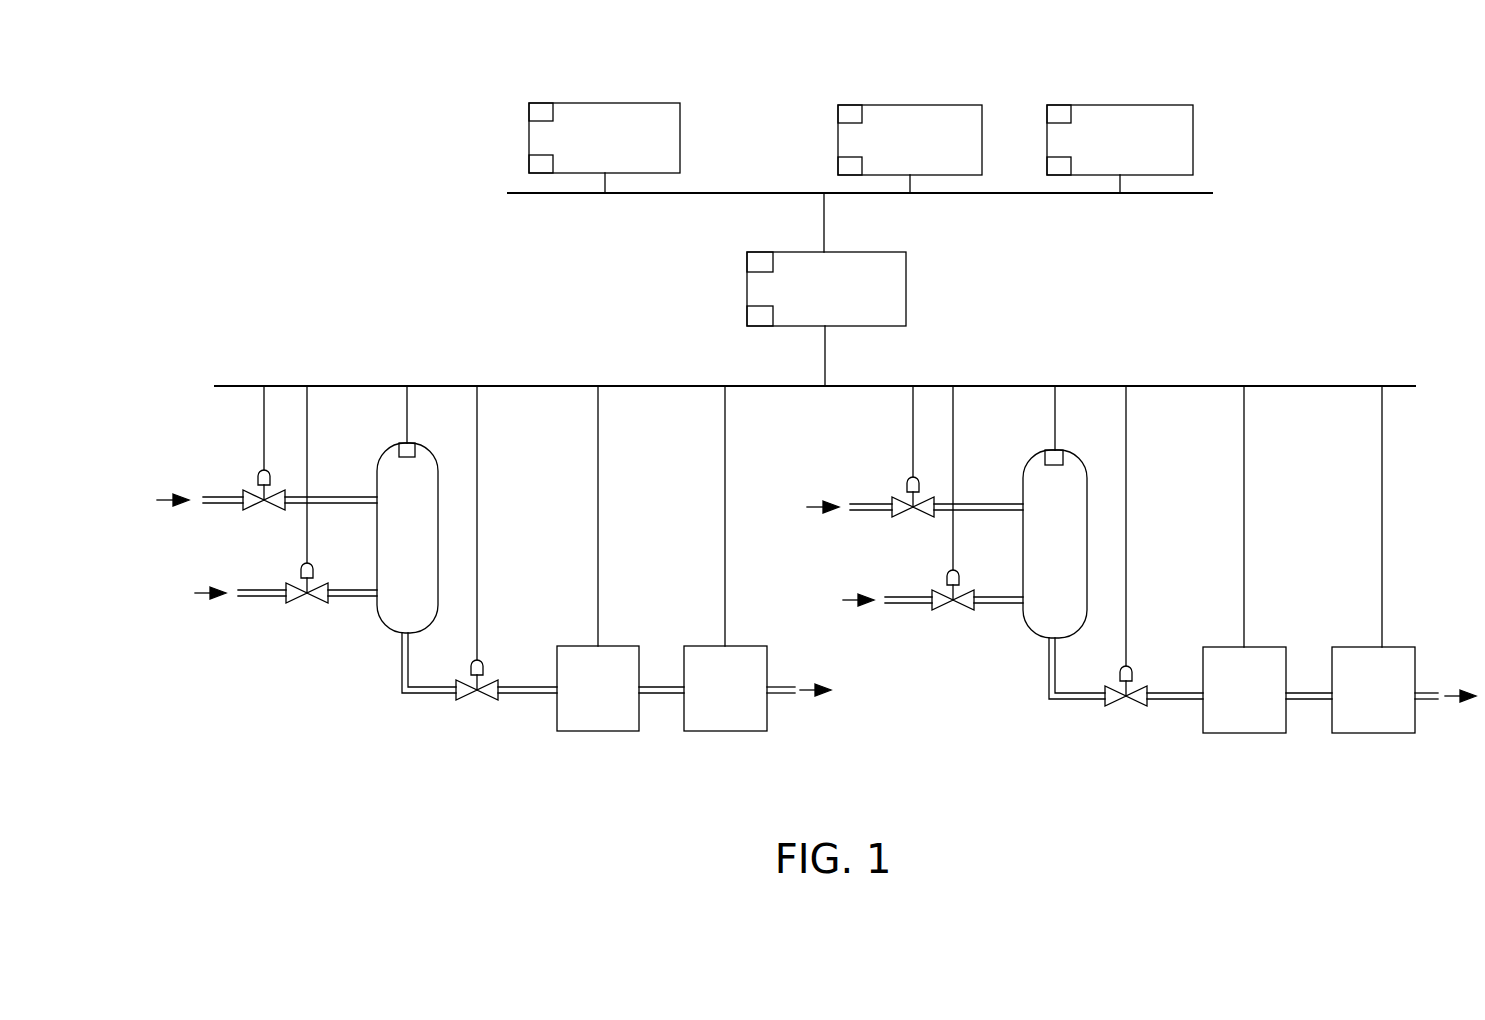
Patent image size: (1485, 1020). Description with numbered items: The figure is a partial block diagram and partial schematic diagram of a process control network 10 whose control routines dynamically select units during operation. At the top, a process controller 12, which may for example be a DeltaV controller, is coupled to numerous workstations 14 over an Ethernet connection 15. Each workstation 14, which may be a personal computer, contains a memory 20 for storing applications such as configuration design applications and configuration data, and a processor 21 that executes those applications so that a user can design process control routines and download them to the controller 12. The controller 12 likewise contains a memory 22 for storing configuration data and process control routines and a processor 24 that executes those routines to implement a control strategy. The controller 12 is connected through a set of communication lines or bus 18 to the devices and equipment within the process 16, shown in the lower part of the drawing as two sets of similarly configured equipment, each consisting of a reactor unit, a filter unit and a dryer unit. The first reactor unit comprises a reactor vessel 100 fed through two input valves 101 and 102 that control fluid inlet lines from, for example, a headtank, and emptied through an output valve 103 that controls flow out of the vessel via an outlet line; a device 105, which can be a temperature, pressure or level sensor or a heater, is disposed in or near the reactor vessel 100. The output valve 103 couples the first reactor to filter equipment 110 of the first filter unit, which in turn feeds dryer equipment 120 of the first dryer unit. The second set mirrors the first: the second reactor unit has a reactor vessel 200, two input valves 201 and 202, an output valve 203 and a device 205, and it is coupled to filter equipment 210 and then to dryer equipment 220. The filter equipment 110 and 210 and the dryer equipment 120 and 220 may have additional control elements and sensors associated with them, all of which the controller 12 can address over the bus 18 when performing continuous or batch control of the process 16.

The process control network 10 is at (268, 102).
The process controller 12 is at (906, 290).
The workstations 14 is at (680, 140).
The Ethernet connection 15 is at (1000, 194).
The process 16 is at (251, 324).
The bus 18 is at (825, 364).
The memory 20 is at (529, 165).
The processor 21 is at (529, 111).
The memory 22 is at (747, 316).
The processor 24 is at (756, 252).
The reactor vessel 100 is at (385, 594).
The input valve 101 is at (252, 511).
The input valve 102 is at (295, 604).
The output valve 103 is at (462, 696).
The device 105 is at (399, 445).
The filter equipment 110 is at (617, 594).
The dryer equipment 120 is at (757, 594).
The reactor vessel 200 is at (1025, 594).
The input valve 201 is at (901, 518).
The input valve 202 is at (941, 610).
The output valve 203 is at (1110, 702).
The device 205 is at (1047, 447).
The filter equipment 210 is at (1264, 594).
The dryer equipment 220 is at (1403, 594).